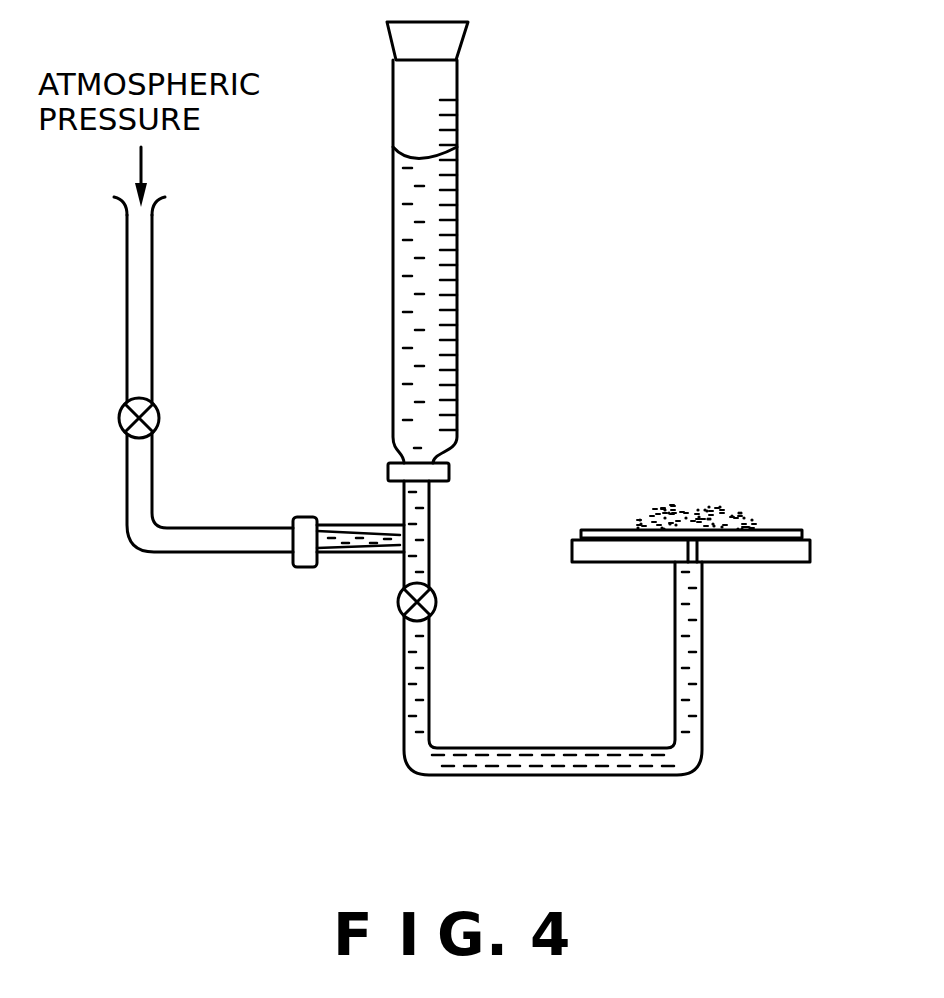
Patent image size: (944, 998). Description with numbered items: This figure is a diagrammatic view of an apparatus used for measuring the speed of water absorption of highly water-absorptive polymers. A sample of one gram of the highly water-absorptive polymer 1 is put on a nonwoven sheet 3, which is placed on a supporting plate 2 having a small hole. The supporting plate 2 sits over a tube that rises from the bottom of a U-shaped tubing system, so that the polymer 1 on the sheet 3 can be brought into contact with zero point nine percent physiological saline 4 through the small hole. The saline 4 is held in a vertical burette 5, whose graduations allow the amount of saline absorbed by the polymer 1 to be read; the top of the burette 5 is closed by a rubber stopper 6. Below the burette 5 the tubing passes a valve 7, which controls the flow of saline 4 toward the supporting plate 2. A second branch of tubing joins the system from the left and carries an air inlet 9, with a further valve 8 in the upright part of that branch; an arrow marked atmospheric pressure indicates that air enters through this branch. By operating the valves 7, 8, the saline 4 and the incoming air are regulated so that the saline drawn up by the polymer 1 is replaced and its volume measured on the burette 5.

The highly water-absorptive polymer 1 is at (705, 500).
The supporting plate 2 is at (800, 562).
The nonwoven sheet 3 is at (802, 533).
The physiological saline 4 is at (423, 303).
The burette 5 is at (457, 122).
The rubber stopper 6 is at (462, 36).
The valve 7 is at (437, 607).
The valve 8 is at (158, 413).
The air inlet 9 is at (363, 548).